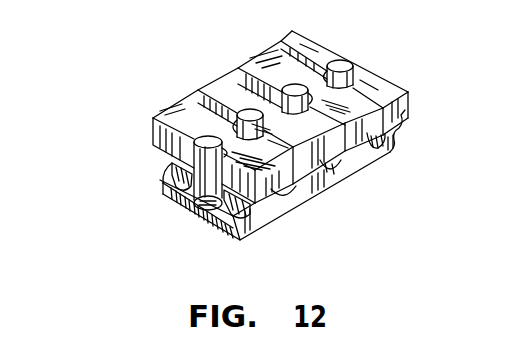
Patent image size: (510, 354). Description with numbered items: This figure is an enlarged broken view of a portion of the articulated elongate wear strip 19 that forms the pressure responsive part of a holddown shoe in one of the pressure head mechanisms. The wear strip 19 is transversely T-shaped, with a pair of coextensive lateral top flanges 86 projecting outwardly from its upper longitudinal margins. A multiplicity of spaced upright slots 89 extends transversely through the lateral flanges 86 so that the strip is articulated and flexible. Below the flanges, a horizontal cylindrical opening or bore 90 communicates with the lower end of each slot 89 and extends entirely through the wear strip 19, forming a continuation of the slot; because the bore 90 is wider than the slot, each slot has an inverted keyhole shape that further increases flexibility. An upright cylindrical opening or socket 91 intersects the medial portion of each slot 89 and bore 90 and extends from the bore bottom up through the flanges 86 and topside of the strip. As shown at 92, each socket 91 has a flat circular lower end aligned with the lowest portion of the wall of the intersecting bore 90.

The articulated elongate wear strip 19 is at (146, 112).
The lateral top flanges 86 is at (257, 53).
The upright slots 89 is at (198, 90).
The horizontal cylindrical opening or bore 90 is at (175, 168).
The upright cylindrical opening or socket 91 is at (210, 136).
The flat circular lower end or bottom of socket 92 is at (197, 218).